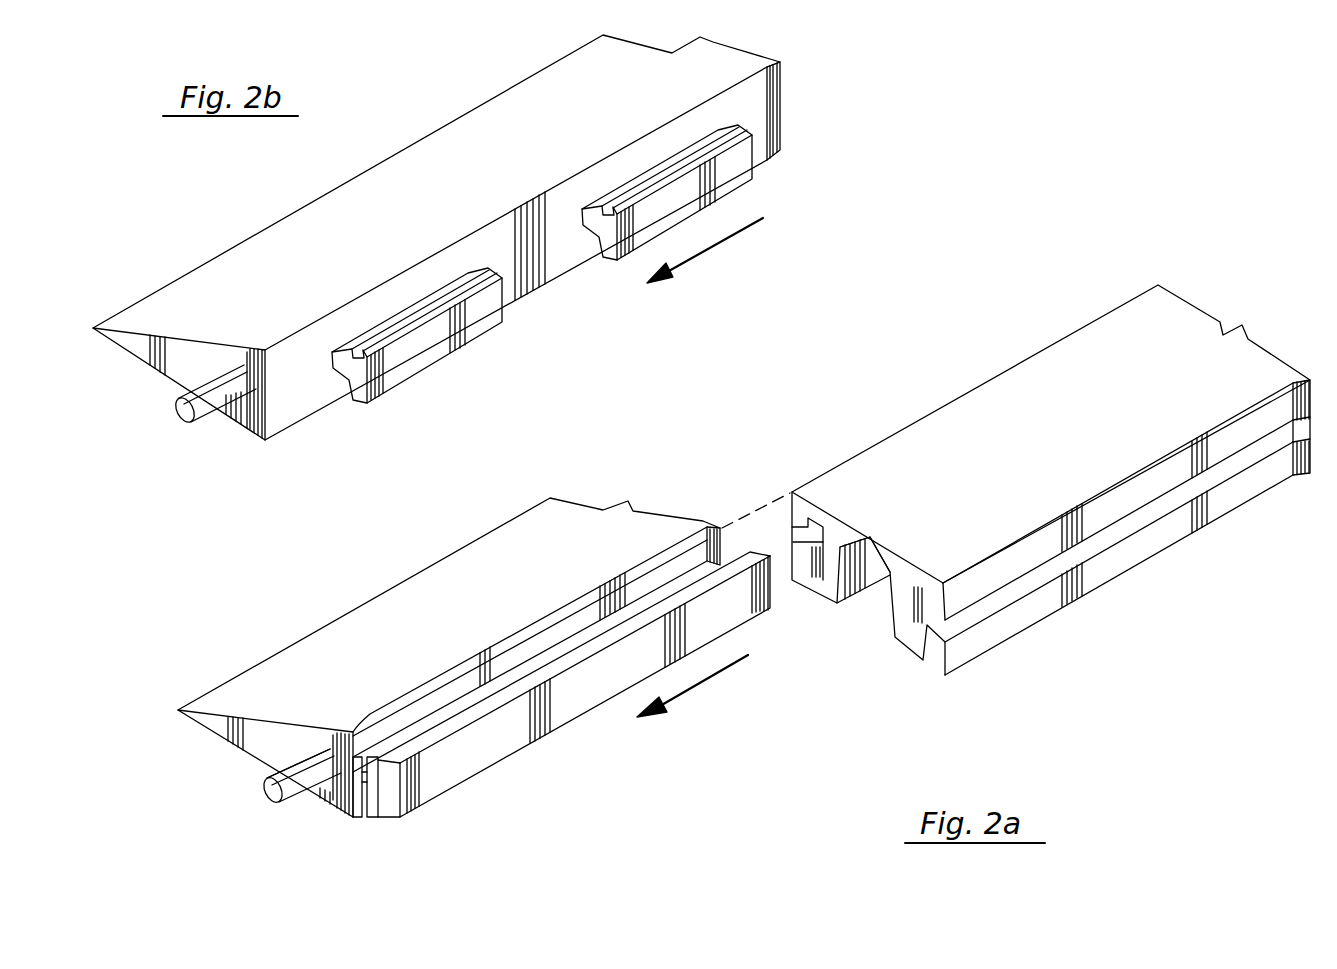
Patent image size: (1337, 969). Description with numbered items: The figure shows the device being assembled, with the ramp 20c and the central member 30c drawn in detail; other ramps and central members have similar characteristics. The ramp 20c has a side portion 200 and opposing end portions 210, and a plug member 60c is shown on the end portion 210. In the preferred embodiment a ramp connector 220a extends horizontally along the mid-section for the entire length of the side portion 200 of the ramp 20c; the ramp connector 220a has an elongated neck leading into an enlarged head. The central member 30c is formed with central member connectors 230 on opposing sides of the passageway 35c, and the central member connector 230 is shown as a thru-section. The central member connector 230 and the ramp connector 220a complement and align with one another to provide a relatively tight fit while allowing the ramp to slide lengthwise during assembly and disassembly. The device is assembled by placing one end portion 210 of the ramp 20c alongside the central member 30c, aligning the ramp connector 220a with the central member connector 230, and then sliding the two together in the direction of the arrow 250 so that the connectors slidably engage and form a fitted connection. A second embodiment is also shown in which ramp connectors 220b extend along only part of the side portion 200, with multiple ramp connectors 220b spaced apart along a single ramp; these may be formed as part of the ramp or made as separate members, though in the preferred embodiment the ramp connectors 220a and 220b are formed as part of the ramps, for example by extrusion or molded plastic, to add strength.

In FIG. 2A, the ramp 20c is at (460, 590).
In FIG. 2A, the central member 30c is at (1157, 348).
In FIG. 2A, the passageway 35c is at (877, 603).
In FIG. 2A, the plug member 60c is at (272, 792).
In FIG. 2B, the side portion 200 is at (288, 401).
In FIG. 2A, the side portion 200 is at (413, 727).
In FIG. 2B, the end portion 210 is at (170, 371).
In FIG. 2A, the end portion 210 is at (268, 738).
In FIG. 2A, the ramp connector 220a is at (440, 764).
In FIG. 2B, the ramp connector 220b is at (473, 320).
In FIG. 2A, the central member connector 230 is at (917, 626).
In FIG. 2B, the arrow 250 is at (714, 248).
In FIG. 2A, the arrow 250 is at (700, 684).